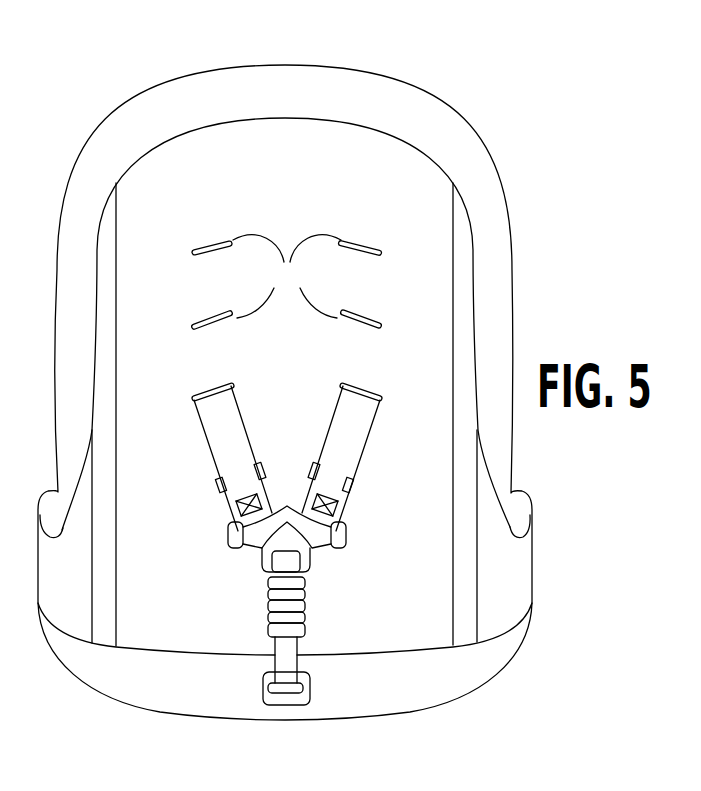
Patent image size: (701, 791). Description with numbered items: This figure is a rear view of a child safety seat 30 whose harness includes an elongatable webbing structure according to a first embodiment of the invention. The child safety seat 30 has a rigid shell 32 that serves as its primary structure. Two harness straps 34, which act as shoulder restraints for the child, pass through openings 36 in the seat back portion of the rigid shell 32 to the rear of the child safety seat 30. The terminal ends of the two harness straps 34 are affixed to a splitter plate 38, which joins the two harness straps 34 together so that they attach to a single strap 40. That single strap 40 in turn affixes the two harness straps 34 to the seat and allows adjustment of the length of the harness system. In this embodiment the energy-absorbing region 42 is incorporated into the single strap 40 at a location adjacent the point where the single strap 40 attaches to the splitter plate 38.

The child safety seat 30 is at (466, 80).
The rigid shell 32 is at (338, 133).
The harness straps 34 is at (343, 437).
The openings 36 is at (342, 384).
The splitter plate 38 is at (331, 548).
The single strap 40 is at (291, 647).
The energy-absorbing region 42 is at (320, 593).